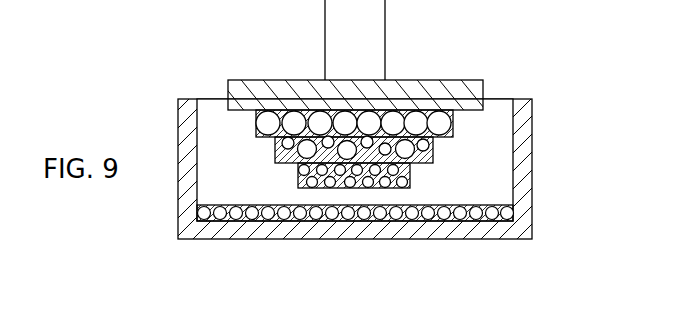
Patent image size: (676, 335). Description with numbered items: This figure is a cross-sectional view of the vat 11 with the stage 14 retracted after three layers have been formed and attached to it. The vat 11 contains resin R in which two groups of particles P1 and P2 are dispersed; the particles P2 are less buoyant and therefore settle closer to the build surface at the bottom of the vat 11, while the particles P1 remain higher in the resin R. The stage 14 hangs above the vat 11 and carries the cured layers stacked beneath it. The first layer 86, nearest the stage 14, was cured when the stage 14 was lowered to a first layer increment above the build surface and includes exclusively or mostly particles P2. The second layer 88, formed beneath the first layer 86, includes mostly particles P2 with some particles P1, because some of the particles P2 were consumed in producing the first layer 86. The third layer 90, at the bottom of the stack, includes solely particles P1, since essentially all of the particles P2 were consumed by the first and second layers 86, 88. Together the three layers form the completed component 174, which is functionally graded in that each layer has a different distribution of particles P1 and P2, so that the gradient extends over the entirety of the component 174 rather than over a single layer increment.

The vat 11 is at (197, 220).
The stage 14 is at (371, 51).
The first layer 86 is at (256, 124).
The second layer 88 is at (275, 150).
The third layer 90 is at (299, 176).
The component 174 is at (426, 182).
The particles P1 is at (507, 212).
The particles P2 is at (442, 127).
The resin R is at (497, 206).